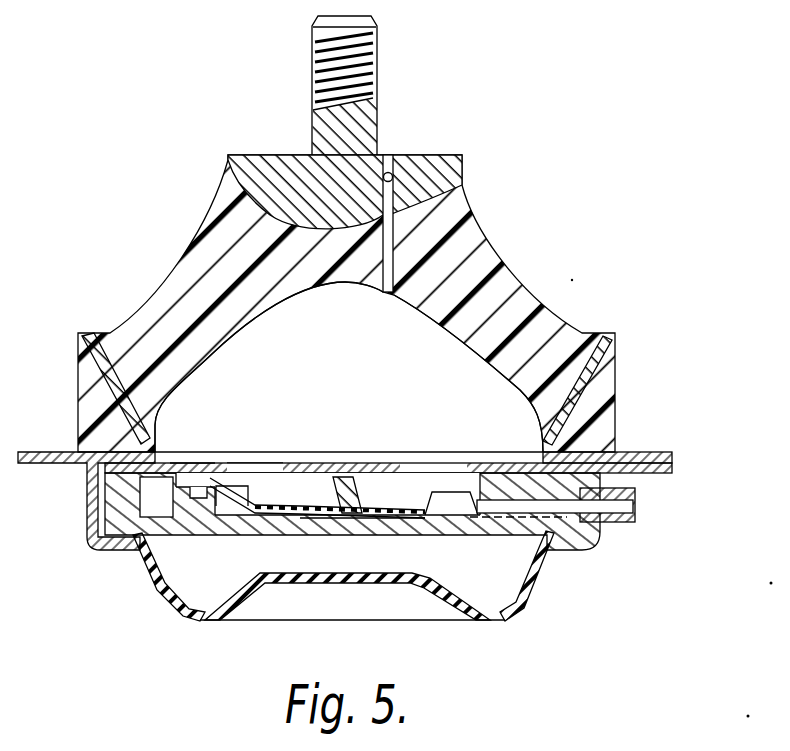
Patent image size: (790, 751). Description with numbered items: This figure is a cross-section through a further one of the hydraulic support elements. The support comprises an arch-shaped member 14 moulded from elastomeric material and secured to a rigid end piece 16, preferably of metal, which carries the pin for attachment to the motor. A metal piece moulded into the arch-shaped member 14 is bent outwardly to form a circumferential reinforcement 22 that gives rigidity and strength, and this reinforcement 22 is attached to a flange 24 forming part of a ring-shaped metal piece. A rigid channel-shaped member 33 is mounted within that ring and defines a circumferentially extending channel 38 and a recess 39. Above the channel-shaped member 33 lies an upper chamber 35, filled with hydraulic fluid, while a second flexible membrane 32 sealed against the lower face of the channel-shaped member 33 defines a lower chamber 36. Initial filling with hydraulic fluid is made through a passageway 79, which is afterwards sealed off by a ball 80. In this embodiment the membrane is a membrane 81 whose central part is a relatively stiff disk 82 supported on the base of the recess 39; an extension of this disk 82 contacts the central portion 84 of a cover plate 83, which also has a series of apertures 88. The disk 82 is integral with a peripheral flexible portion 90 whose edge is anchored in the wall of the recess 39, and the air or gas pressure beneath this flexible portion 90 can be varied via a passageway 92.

The arch-shaped member 14 is at (233, 200).
The rigid end piece 16 is at (432, 165).
The circumferential reinforcement 22 is at (648, 452).
The flange 24 is at (657, 473).
The second flexible membrane 32 is at (410, 578).
The channel-shaped member 33 is at (198, 505).
The upper chamber 35 is at (323, 338).
The lower chamber 36 is at (478, 572).
The circumferentially extending channel 38 is at (150, 490).
The recess 39 is at (229, 507).
The passageway 79 is at (393, 203).
The ball 80 is at (390, 170).
The membrane 81 is at (301, 494).
The stiff disk 82 is at (441, 514).
The cover plate 83 is at (192, 462).
The central portion 84 is at (363, 465).
The apertures 88 is at (250, 463).
The peripheral flexible portion 90 is at (234, 508).
The passageway 92 is at (612, 523).